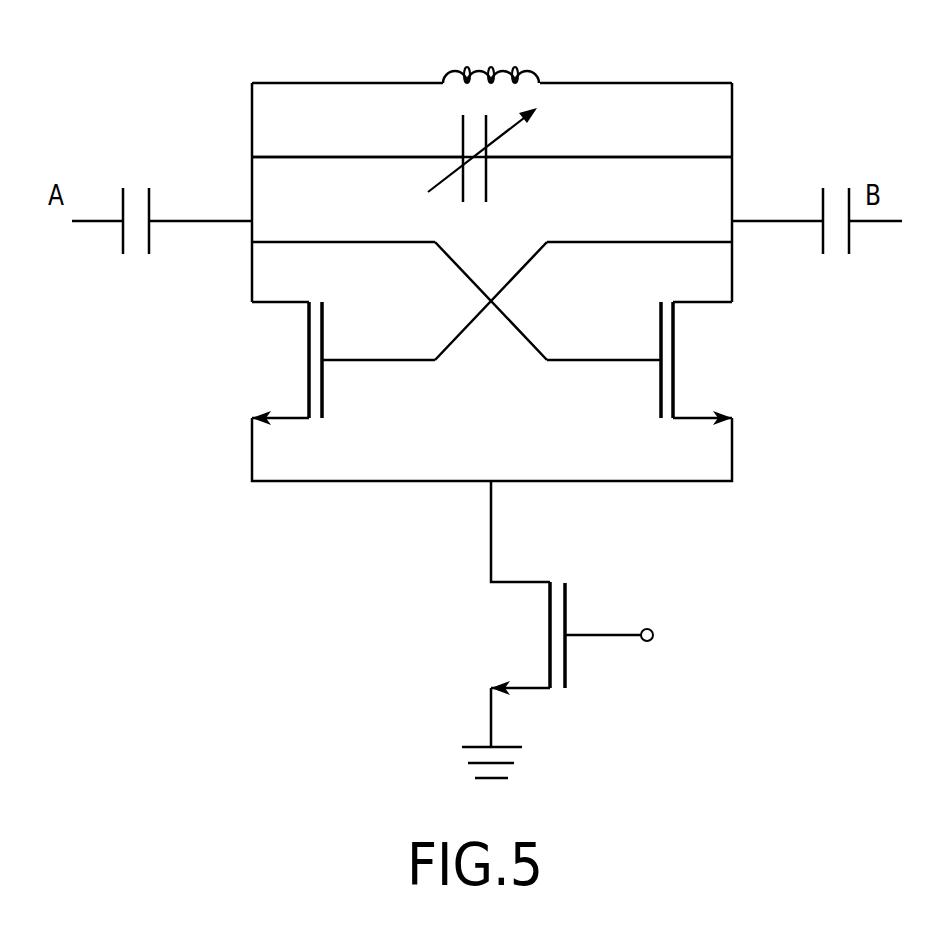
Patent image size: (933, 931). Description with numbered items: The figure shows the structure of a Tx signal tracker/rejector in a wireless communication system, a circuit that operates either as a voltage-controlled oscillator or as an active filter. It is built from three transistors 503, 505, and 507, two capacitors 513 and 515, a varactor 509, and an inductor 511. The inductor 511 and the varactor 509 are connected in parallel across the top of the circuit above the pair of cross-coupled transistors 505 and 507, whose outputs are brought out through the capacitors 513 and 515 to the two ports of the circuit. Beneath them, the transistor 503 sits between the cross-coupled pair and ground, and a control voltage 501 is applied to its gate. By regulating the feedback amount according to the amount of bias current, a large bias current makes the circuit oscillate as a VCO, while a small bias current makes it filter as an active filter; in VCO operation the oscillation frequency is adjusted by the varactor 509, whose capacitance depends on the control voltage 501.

The control voltage Vcont 501 is at (629, 604).
The transistor 503 is at (566, 584).
The transistor 505 is at (325, 323).
The transistor 507 is at (658, 321).
The varactor 509 is at (492, 155).
The inductor 511 is at (534, 60).
The capacitor 513 is at (152, 247).
The capacitor 515 is at (852, 247).